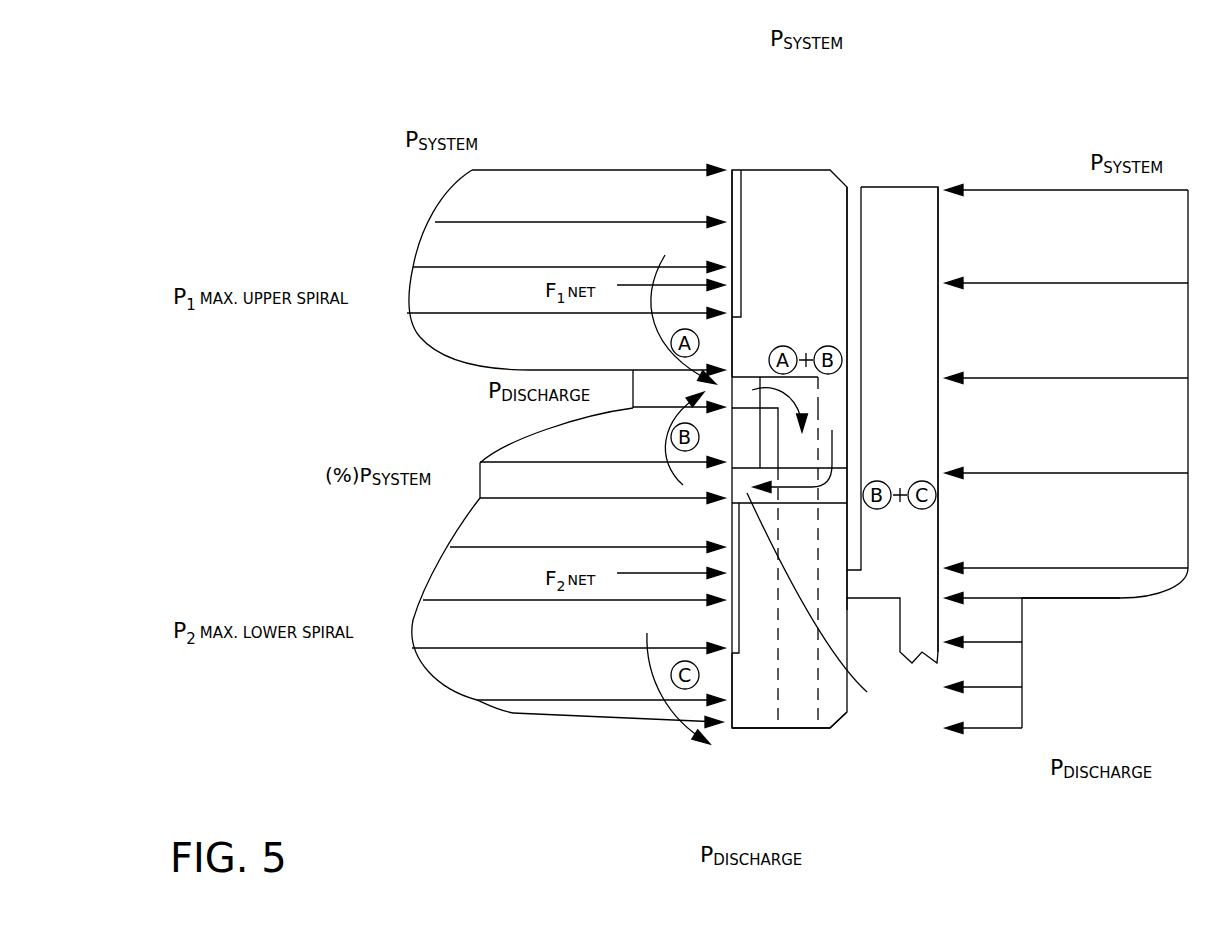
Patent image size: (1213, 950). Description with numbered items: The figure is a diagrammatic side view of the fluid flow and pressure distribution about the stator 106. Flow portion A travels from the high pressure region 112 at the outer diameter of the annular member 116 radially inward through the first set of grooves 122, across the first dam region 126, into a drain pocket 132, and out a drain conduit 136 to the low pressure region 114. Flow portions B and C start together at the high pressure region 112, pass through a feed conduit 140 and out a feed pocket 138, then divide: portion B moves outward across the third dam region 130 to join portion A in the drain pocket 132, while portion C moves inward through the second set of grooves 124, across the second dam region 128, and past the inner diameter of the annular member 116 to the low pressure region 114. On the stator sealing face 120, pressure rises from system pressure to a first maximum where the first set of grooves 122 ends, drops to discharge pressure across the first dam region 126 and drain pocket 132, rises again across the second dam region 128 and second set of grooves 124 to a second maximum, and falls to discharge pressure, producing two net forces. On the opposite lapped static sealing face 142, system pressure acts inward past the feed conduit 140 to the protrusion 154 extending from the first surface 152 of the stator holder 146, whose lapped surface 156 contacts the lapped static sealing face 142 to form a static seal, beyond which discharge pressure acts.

The stator 106 is at (819, 125).
The high pressure region 112 is at (682, 54).
The low pressure region 114 is at (1002, 850).
The annular member 116 is at (755, 723).
The stator sealing face 120 is at (733, 170).
The first set of grooves 122 is at (743, 197).
The second set of grooves 124 is at (740, 663).
The first dam region 126 is at (730, 340).
The second dam region 128 is at (728, 727).
The third dam region 130 is at (745, 418).
The drain pocket 132 is at (745, 378).
The drain conduit 136 is at (797, 720).
The feed pocket 138 is at (832, 605).
The feed conduit 140 is at (837, 500).
The lapped static sealing face 142 is at (847, 278).
The stator holder 146 is at (928, 190).
The first surface 152 is at (858, 188).
The protrusion 154 is at (860, 583).
The lapped surface 156 is at (838, 582).